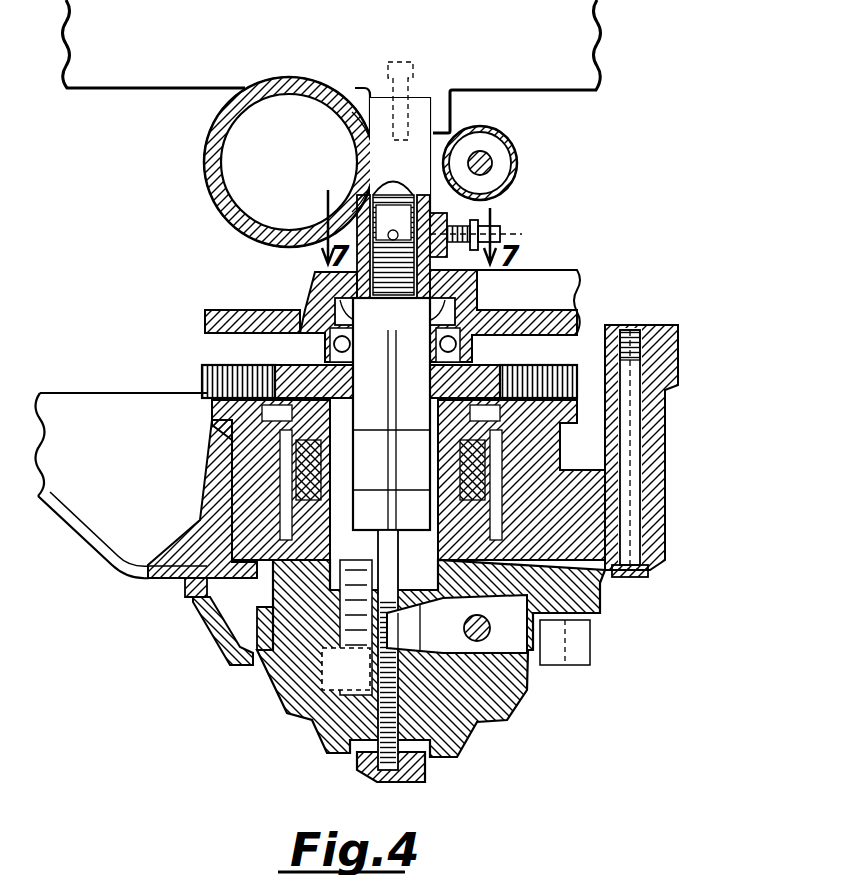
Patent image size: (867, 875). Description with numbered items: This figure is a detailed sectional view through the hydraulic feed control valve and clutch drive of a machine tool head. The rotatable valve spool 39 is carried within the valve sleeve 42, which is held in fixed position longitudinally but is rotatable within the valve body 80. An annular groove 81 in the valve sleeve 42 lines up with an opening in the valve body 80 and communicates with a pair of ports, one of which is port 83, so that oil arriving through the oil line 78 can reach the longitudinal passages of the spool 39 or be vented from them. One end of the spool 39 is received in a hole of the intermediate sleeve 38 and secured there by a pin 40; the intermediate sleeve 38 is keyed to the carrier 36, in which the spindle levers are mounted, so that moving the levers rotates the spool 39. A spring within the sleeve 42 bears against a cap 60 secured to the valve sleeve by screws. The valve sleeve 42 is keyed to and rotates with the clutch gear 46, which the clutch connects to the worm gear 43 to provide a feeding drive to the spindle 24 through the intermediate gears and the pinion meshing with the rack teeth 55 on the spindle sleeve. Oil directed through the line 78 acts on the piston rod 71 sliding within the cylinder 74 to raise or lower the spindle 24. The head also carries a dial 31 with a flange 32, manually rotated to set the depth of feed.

The spindle 24 is at (215, 200).
The dial 31 is at (214, 628).
The flange 32 is at (165, 582).
The carrier 36 is at (317, 716).
The intermediate sleeve 38 is at (292, 680).
The rotatable valve spool 39 is at (388, 533).
The pin 40 is at (387, 562).
The valve sleeve 42 is at (378, 262).
The worm gear 43 is at (215, 418).
The clutch gear 46 is at (205, 372).
The rack teeth 55 is at (355, 142).
The cap 60 is at (352, 513).
The piston rod 71 is at (481, 151).
The cylinder 74 is at (506, 150).
The oil line 78 is at (499, 233).
The valve body 80 is at (420, 110).
The annular groove 81 is at (363, 203).
The port 83 is at (393, 230).